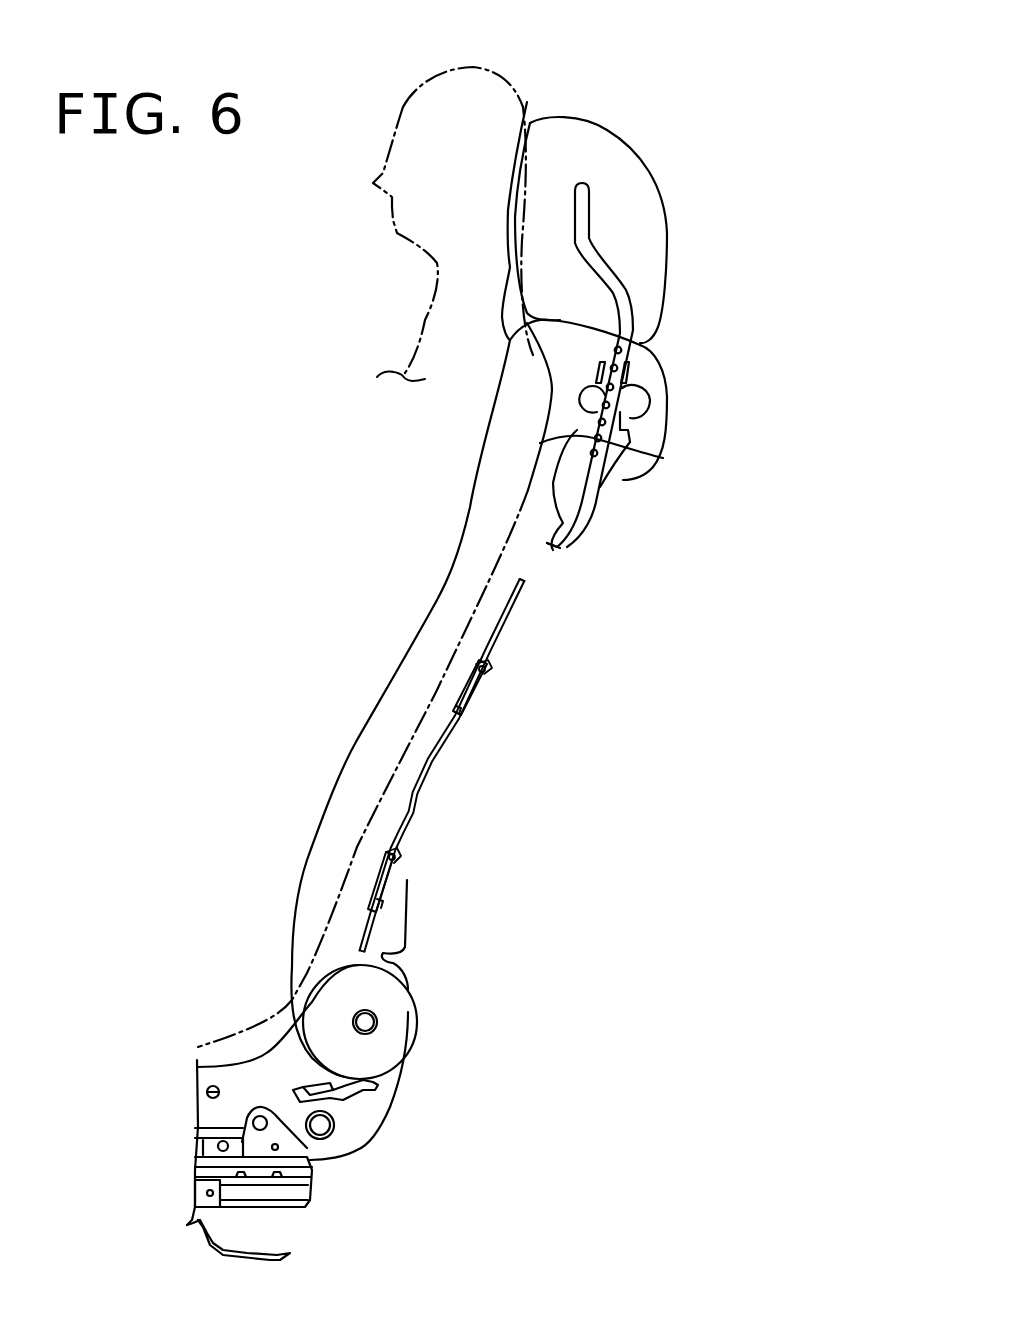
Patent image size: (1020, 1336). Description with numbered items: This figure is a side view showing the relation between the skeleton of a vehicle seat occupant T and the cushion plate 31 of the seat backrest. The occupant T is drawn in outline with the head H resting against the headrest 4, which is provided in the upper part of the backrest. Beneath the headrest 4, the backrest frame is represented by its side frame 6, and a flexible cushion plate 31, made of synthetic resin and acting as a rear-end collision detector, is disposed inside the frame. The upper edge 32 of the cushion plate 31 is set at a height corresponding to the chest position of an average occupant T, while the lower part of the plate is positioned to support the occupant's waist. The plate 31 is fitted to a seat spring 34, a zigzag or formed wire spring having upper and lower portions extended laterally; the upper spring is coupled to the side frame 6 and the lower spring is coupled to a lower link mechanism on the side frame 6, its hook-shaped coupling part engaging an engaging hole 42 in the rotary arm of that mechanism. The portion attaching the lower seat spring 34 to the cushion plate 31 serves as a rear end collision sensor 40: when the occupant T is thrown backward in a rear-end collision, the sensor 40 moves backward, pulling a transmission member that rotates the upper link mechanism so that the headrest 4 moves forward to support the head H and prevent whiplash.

The head H is at (527, 102).
The vehicle seat occupant T is at (663, 458).
The headrest 4 is at (665, 287).
The side frame 6 is at (408, 930).
The cushion plate 31 is at (433, 757).
The upper edge 32 is at (527, 580).
The seat spring 34 is at (470, 700).
The rear end collision sensor 40 is at (380, 875).
The engaging hole 42 is at (487, 667).